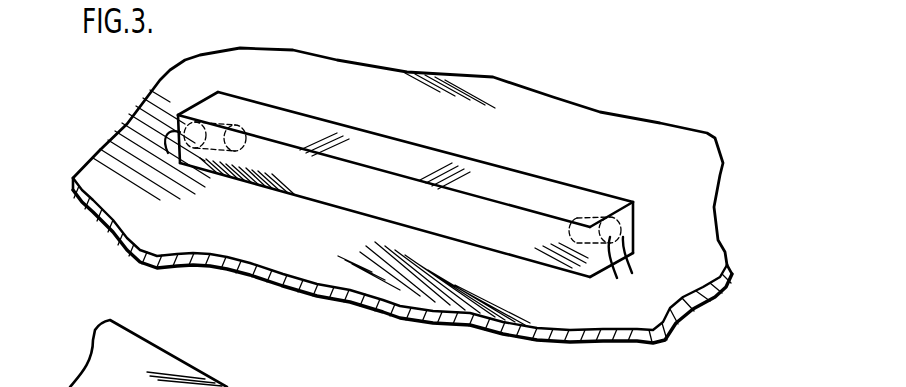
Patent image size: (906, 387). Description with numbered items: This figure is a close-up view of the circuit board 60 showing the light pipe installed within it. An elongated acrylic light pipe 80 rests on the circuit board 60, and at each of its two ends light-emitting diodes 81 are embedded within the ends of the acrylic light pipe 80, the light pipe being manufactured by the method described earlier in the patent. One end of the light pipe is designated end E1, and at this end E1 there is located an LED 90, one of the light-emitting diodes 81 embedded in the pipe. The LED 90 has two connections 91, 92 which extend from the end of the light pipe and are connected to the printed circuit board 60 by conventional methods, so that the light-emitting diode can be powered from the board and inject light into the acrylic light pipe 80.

The circuit board 60 is at (510, 110).
The light pipe 80 is at (363, 133).
The light-emitting diodes 81 is at (228, 126).
The LED 90 is at (615, 231).
The connection 91 is at (633, 267).
The connection 92 is at (617, 278).
The end E1 is at (552, 279).